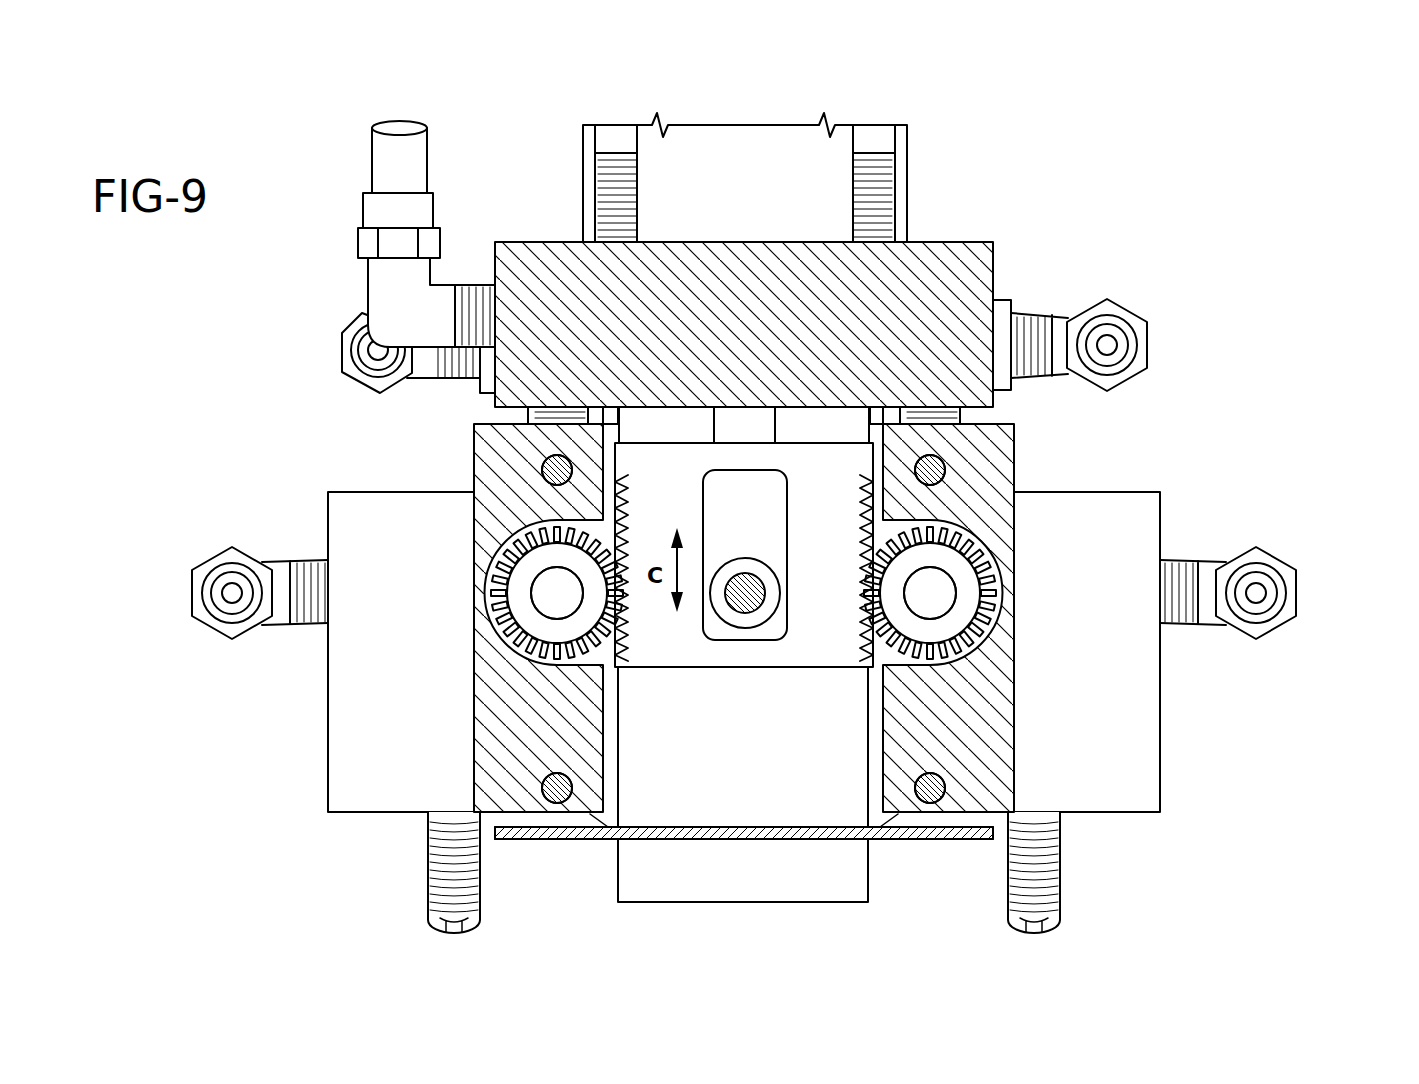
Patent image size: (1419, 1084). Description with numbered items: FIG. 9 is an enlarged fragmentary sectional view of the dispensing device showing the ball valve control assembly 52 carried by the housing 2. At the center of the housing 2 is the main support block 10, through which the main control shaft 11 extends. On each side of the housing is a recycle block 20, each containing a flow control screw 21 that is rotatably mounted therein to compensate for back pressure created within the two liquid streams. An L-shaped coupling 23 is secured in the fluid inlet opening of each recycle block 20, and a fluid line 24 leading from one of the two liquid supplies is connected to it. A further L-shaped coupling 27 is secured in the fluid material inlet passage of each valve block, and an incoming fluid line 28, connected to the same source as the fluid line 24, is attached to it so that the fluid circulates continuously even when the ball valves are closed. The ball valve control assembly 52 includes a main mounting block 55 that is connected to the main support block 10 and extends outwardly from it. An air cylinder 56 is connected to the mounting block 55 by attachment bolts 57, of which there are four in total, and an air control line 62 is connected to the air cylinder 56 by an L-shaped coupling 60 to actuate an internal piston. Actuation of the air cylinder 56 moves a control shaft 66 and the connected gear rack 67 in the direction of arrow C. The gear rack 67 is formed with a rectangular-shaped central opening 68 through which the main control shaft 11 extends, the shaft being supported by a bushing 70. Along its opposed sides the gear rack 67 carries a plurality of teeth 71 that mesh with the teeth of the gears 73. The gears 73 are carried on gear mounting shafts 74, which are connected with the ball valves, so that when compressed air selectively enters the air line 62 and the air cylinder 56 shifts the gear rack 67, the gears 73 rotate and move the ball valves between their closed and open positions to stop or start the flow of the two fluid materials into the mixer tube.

The housing 2 is at (608, 884).
The main support block 10 is at (790, 876).
The main control shaft 11 is at (745, 605).
The recycle block 20 is at (338, 511).
The flow control screw 21 is at (434, 871).
The L-shaped coupling 23 is at (185, 591).
The fluid line 24 is at (212, 566).
The L-shaped coupling 27 is at (1148, 345).
The incoming fluid line 28 is at (1126, 322).
The ball valve control assembly 52 is at (438, 420).
The main mounting block 55 is at (706, 264).
The air cylinder 56 is at (742, 150).
The attachment bolt 57 is at (603, 204).
The L-shaped coupling 60 is at (385, 278).
The air control line 62 is at (388, 156).
The control shaft 66 is at (768, 426).
The gear rack 67 is at (796, 655).
The rectangular-shaped central opening 68 is at (722, 508).
The bushing 70 is at (730, 620).
The teeth 71 is at (620, 655).
The gear 73 is at (515, 579).
The gear mounting shaft 74 is at (545, 600).